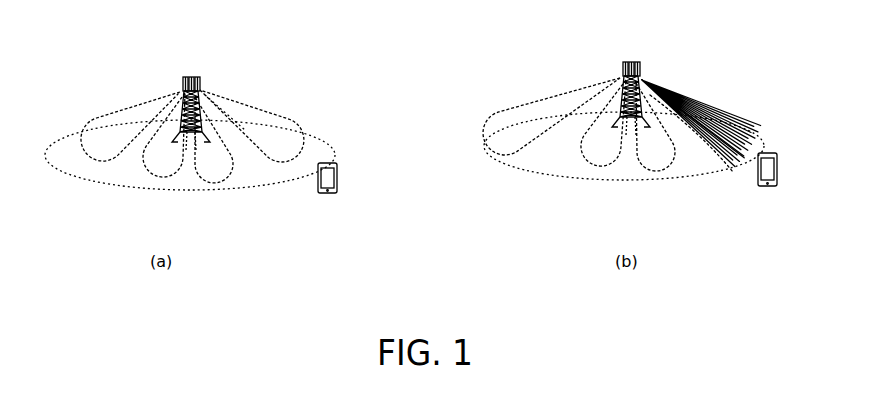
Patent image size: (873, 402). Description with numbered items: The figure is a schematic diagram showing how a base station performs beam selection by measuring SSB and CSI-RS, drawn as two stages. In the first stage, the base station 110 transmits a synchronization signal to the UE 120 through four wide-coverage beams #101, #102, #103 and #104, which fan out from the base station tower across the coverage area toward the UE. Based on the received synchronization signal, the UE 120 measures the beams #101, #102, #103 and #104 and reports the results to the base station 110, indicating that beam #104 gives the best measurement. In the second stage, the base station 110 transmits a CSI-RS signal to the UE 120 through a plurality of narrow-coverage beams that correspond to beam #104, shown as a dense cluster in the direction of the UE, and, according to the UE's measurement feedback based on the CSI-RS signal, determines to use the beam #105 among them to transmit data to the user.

The base station 110 is at (200, 87).
The UE 120 is at (338, 180).
The beam # 101 is at (83, 143).
The beam # 102 is at (147, 172).
The beam # 103 is at (213, 177).
The beam # 104 is at (297, 118).
The beam # 105 is at (748, 160).